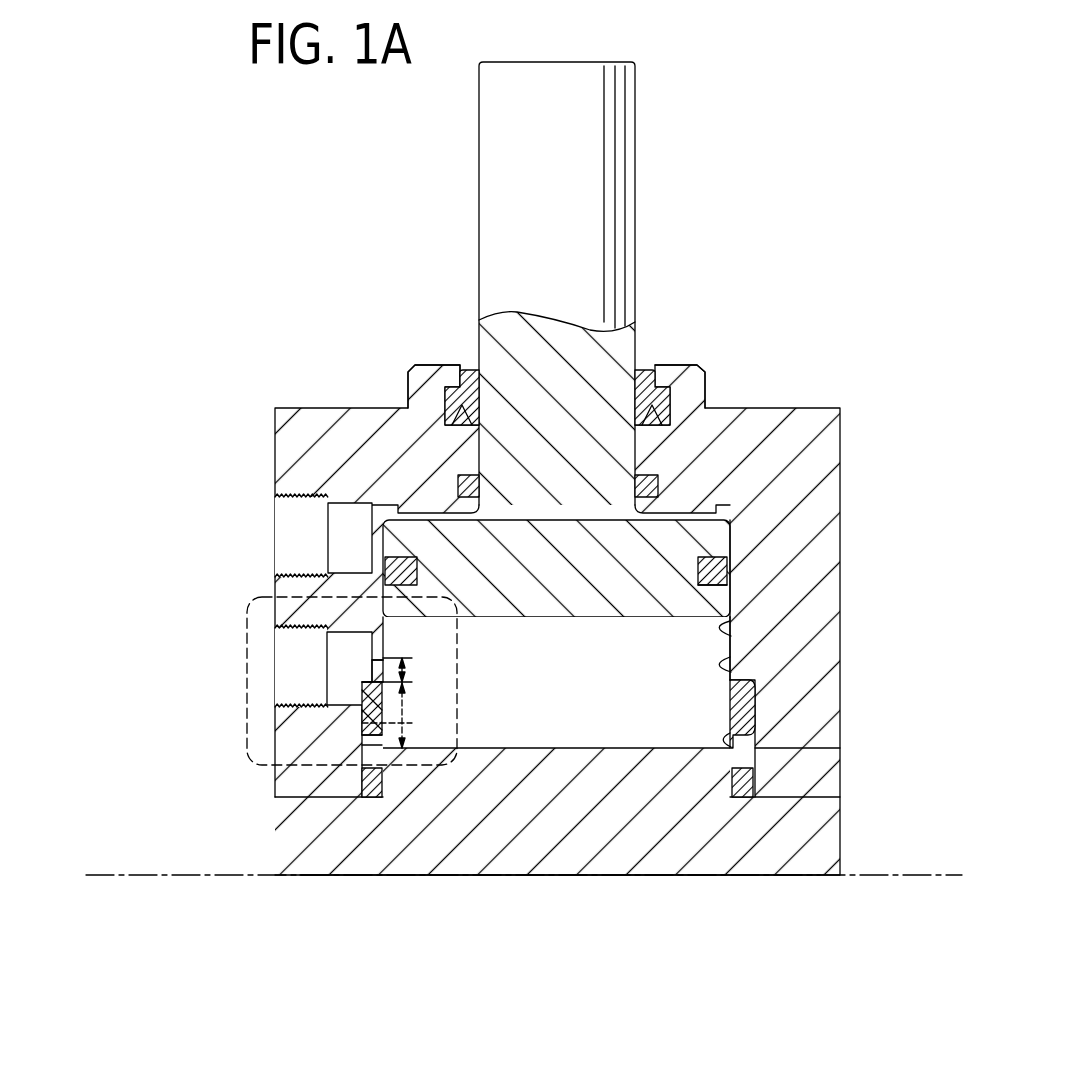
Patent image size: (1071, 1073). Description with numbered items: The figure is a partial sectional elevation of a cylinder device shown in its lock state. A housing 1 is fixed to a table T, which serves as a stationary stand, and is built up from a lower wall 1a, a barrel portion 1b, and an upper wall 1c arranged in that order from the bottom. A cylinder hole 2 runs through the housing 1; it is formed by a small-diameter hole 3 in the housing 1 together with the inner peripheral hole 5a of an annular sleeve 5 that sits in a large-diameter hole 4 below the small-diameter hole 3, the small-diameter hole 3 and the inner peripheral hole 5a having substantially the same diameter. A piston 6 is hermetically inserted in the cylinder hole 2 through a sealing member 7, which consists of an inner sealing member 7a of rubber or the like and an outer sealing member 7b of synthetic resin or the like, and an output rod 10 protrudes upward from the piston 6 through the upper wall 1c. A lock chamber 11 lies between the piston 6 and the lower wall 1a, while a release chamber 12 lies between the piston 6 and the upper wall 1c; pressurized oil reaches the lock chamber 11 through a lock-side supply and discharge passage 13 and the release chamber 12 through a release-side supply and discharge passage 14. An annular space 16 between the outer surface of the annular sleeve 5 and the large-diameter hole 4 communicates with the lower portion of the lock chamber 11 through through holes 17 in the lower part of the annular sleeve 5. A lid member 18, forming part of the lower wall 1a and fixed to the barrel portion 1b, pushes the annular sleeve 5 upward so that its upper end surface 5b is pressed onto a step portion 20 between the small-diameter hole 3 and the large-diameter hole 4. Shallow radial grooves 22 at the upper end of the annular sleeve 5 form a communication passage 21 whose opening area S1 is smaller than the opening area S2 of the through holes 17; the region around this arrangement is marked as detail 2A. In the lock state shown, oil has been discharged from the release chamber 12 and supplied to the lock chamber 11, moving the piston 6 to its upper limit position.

The housing 1 is at (801, 398).
The lower wall 1a is at (808, 836).
The barrel portion 1b is at (795, 582).
The upper wall 1c is at (795, 440).
The cylinder hole 2 is at (735, 636).
The small-diameter hole 3 is at (735, 668).
The large-diameter hole 4 is at (735, 746).
The annular sleeve 5 is at (757, 705).
The inner peripheral hole 5a is at (728, 703).
The upper end surface 5b is at (377, 680).
The piston 6 is at (612, 600).
The sealing member 7 is at (700, 592).
The inner sealing member 7a is at (698, 572).
The outer sealing member 7b is at (717, 545).
The output rod 10 is at (618, 263).
The lock chamber 11 is at (600, 728).
The release chamber 12 is at (455, 513).
The lock-side supply and discharge passage 13 is at (338, 668).
The release-side supply and discharge passage 14 is at (338, 524).
The annular space 16 is at (368, 702).
The through holes 17 is at (365, 755).
The lid member 18 is at (472, 810).
The step portion 20 is at (368, 728).
The communication passage 21 is at (214, 695).
The grooves 22 is at (362, 690).
The detail region 2A is at (240, 618).
The opening area of the communication passage S1 is at (406, 682).
The opening area of the through holes S2 is at (406, 723).
The table T is at (228, 875).